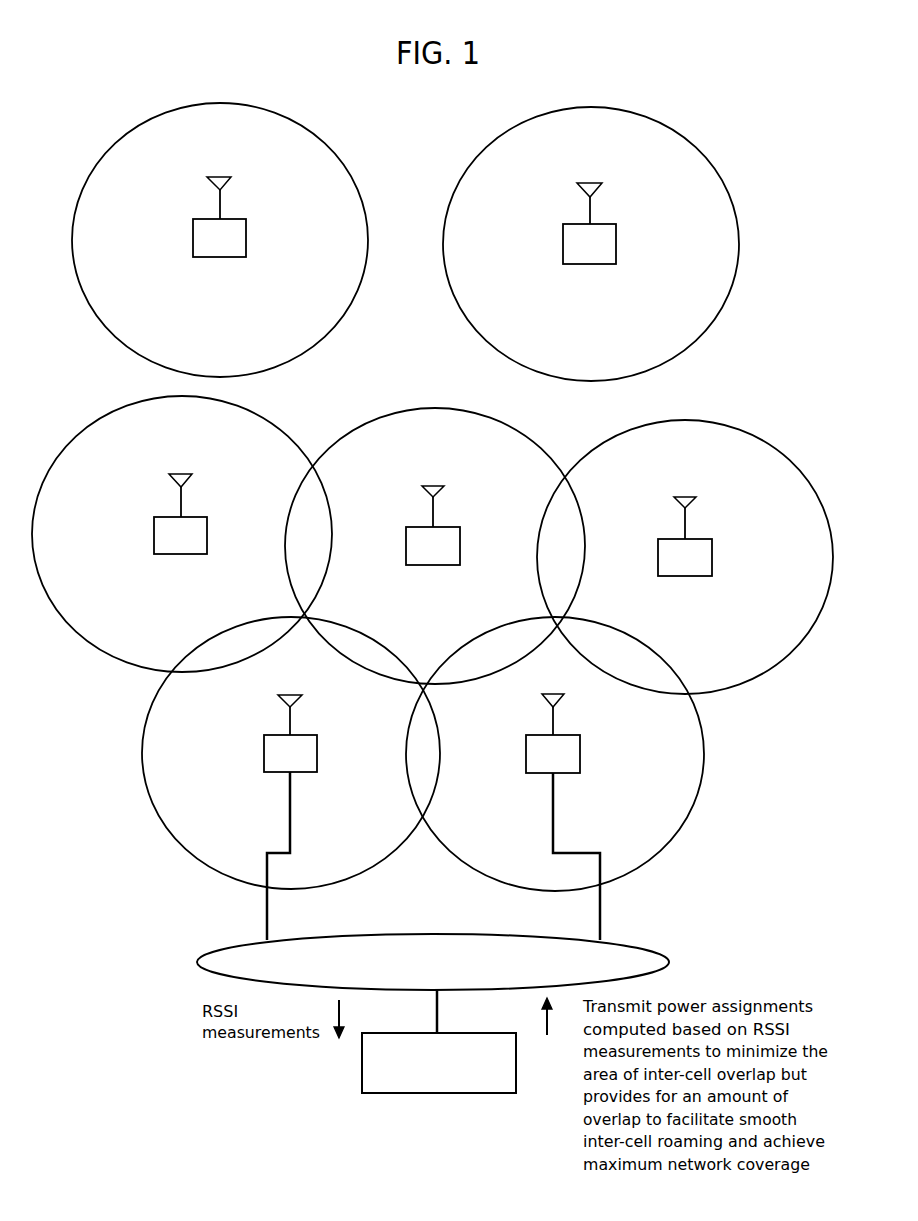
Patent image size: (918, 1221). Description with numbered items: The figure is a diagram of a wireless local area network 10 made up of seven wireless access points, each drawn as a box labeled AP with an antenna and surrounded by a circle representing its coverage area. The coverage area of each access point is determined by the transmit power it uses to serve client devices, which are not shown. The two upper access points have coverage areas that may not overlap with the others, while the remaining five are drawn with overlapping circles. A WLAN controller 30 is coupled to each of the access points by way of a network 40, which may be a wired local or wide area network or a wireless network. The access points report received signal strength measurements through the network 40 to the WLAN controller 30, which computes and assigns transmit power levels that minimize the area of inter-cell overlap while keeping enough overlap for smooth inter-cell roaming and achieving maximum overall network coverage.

The wireless local area network 10 is at (775, 219).
The WLAN controller 30 is at (516, 1063).
The network 40 is at (213, 973).